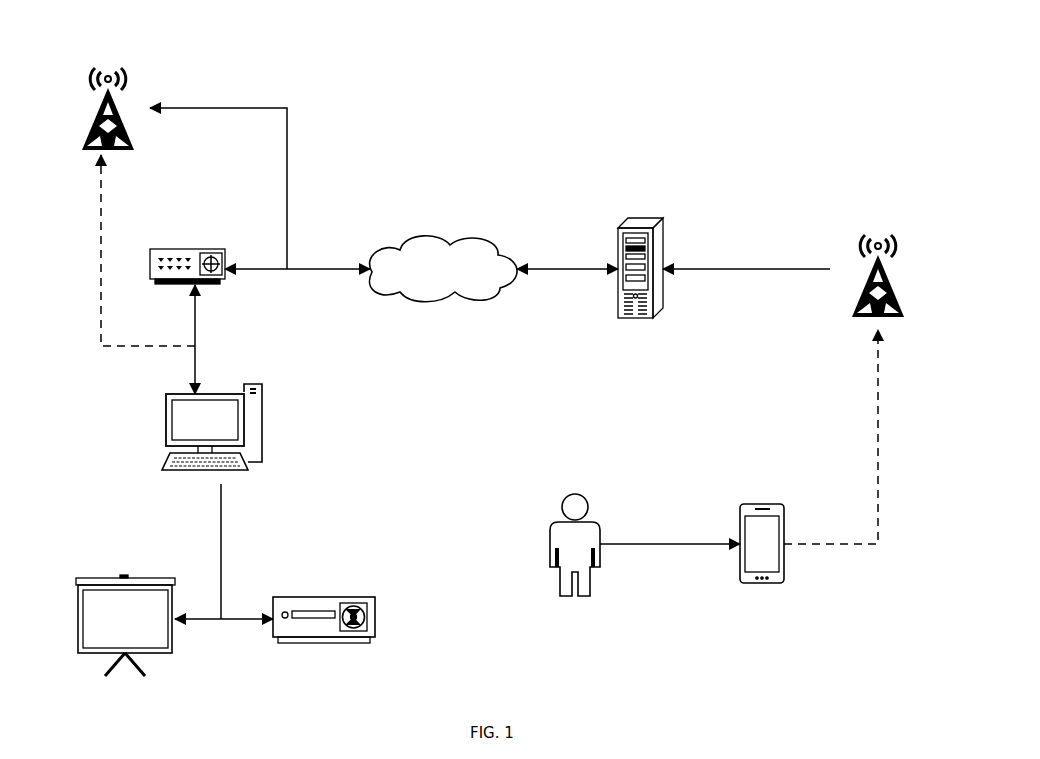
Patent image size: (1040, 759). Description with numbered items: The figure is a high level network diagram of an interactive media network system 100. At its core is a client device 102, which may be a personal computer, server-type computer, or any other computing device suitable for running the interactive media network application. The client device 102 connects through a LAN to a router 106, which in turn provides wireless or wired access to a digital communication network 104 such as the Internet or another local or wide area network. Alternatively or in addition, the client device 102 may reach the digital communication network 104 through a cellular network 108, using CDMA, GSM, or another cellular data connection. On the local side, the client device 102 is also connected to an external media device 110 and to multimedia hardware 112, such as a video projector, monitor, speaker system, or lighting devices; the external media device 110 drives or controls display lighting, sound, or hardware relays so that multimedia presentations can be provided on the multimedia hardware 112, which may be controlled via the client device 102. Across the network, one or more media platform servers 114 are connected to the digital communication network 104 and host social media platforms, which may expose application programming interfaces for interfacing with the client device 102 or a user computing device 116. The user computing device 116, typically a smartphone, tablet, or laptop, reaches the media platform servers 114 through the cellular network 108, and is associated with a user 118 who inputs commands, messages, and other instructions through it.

The interactive media network system 100 is at (600, 68).
The client device 102 is at (166, 430).
The digital communication network 104 is at (457, 278).
The router 106 is at (188, 249).
The cellular network 108 is at (90, 120).
The external media device 110 is at (325, 597).
The multimedia hardware 112 is at (155, 653).
The media platform server 114 is at (640, 225).
The user computing device 116 is at (770, 584).
The user 118 is at (548, 539).